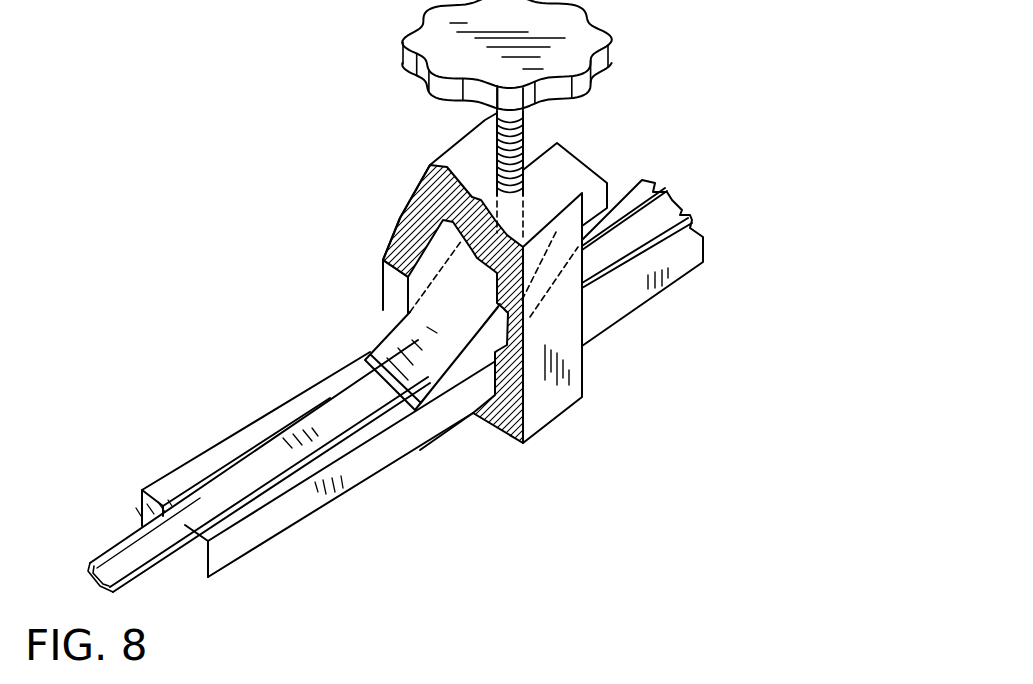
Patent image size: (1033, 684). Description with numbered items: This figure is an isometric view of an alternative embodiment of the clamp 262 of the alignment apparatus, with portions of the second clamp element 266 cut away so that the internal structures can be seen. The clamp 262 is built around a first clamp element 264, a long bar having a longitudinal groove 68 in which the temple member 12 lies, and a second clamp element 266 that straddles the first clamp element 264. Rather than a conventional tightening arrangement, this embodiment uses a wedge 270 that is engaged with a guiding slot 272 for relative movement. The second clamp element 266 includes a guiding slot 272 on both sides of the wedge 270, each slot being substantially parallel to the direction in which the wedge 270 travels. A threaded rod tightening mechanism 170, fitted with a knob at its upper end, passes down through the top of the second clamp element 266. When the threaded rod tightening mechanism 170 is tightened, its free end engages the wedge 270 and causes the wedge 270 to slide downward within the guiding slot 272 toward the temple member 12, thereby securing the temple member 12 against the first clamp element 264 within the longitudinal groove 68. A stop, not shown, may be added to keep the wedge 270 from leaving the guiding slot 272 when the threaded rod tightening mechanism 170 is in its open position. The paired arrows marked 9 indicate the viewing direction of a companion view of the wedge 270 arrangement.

The section view line 9- 9 is at (772, 110).
The temple member 12 is at (237, 490).
The longitudinal groove 68 is at (177, 490).
The threaded rod tightening mechanism 170 is at (527, 124).
The clamp 262 is at (473, 437).
The first clamp element 264 is at (310, 500).
The second clamp element 266 is at (567, 365).
The wedge 270 is at (383, 337).
The guiding slot 272 is at (398, 312).